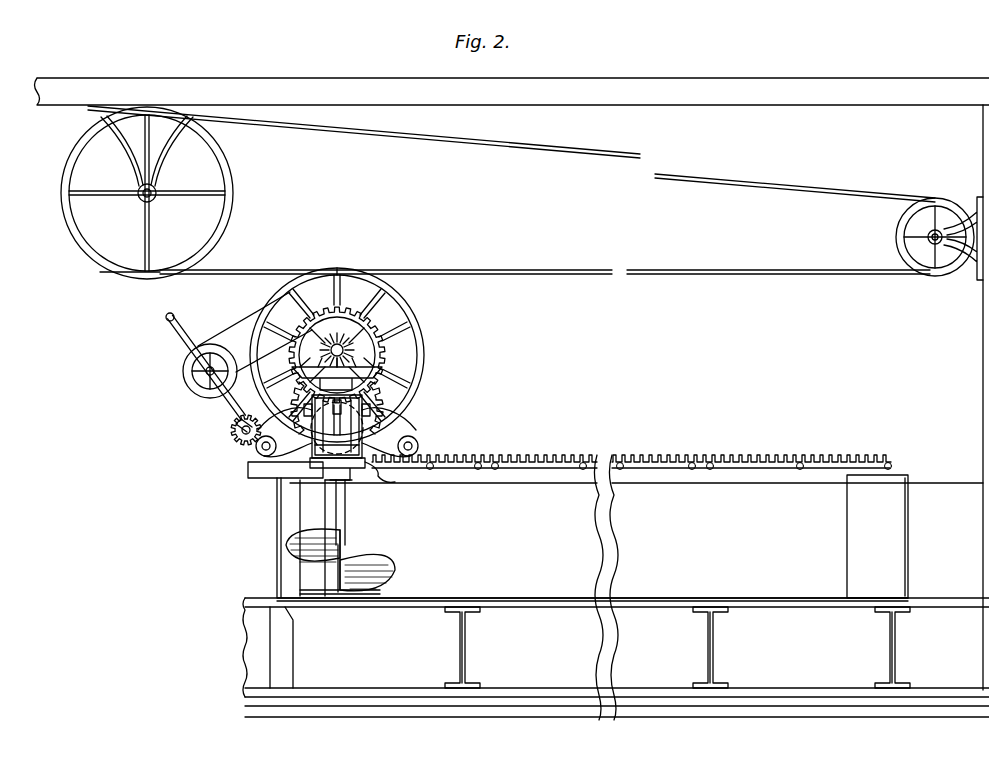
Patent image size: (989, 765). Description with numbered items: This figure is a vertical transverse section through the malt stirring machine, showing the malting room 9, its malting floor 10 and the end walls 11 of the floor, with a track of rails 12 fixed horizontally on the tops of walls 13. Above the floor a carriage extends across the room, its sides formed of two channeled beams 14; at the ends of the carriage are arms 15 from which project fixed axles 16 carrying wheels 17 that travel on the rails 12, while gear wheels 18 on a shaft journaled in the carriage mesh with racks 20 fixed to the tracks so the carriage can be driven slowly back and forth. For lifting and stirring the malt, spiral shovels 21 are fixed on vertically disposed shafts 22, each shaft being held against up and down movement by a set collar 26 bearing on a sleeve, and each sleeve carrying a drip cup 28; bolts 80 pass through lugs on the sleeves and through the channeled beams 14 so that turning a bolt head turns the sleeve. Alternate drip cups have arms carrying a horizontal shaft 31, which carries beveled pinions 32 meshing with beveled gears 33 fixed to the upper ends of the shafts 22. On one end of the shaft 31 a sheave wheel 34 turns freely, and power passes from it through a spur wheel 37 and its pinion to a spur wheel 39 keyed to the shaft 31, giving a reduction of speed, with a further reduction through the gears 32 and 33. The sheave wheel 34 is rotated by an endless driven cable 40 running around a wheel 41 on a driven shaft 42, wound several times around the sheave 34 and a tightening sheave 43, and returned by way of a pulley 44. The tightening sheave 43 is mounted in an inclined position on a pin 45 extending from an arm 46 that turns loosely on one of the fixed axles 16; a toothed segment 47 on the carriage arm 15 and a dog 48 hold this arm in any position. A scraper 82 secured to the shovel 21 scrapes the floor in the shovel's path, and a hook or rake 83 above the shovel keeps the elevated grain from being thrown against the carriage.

The malting room 9 is at (511, 190).
The malting floor 10 is at (531, 603).
The end walls 11 is at (275, 568).
The rails 12 is at (519, 486).
The walls 13 is at (839, 536).
The channeled beams 14 is at (350, 440).
The arms 15 is at (290, 462).
The fixed axles 16 is at (440, 458).
The wheels 17 is at (420, 446).
The gear wheels 18 is at (372, 428).
The racks 20 is at (575, 455).
The spiral shovels 21 is at (388, 566).
The shafts 22 is at (347, 508).
The set collar 26 is at (338, 472).
The drip cups 28 is at (366, 398).
The shaft 31 is at (334, 346).
The beveled pinions 32 is at (341, 348).
The beveled gears 33 is at (363, 360).
The sheave wheel 34 is at (358, 374).
The spur wheel 37 is at (368, 408).
The spur wheel 39 is at (362, 320).
The endless driven cable 40 is at (565, 275).
The wheel 41 is at (233, 200).
The driven shaft 42 is at (154, 199).
The tightening sheave 43 is at (203, 392).
The pulley 44 is at (940, 206).
The pin 45 is at (196, 360).
The arm 46 is at (242, 400).
The toothed segment 47 is at (246, 447).
The dog 48 is at (246, 422).
The bolts 80 is at (372, 418).
The scraper 82 is at (357, 600).
The hooks or rakes 83 is at (392, 483).